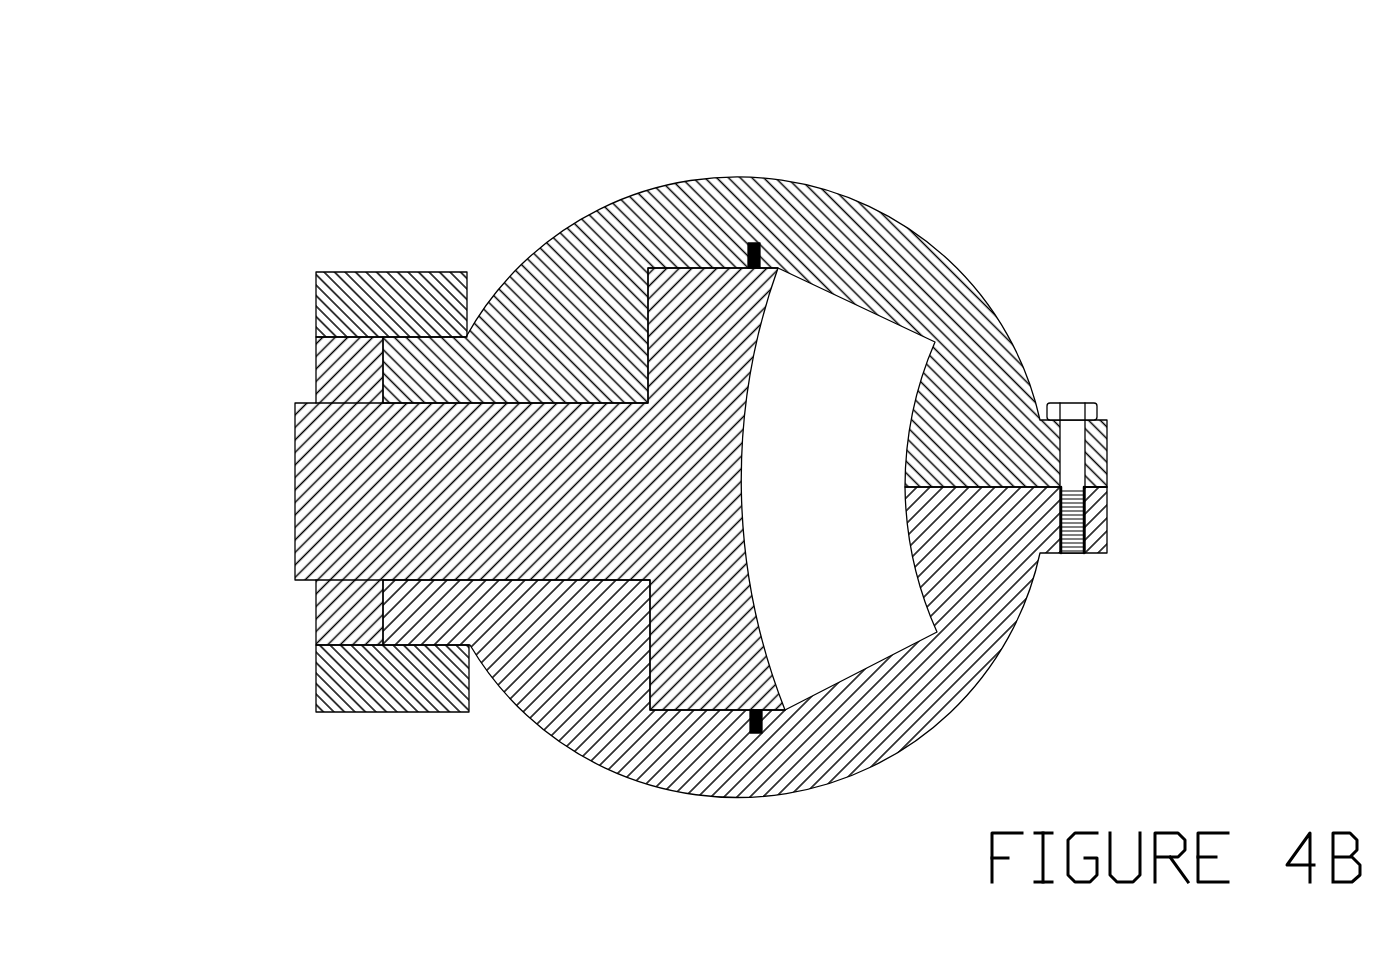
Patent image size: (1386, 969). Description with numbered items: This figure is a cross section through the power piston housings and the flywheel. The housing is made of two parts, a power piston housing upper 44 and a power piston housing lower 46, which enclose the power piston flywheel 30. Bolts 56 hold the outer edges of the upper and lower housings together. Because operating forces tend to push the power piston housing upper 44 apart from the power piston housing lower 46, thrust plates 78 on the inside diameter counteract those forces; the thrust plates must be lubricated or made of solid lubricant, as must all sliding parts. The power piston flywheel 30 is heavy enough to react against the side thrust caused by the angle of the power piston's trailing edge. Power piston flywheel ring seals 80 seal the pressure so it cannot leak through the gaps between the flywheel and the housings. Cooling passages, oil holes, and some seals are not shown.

The power piston flywheel 30 is at (461, 489).
The power piston housing upper 44 is at (745, 275).
The power piston housing lower 46 is at (784, 642).
The bolts 56 is at (1119, 431).
The thrust plates 78 is at (302, 487).
The power piston flywheel ring seals 80 is at (684, 486).